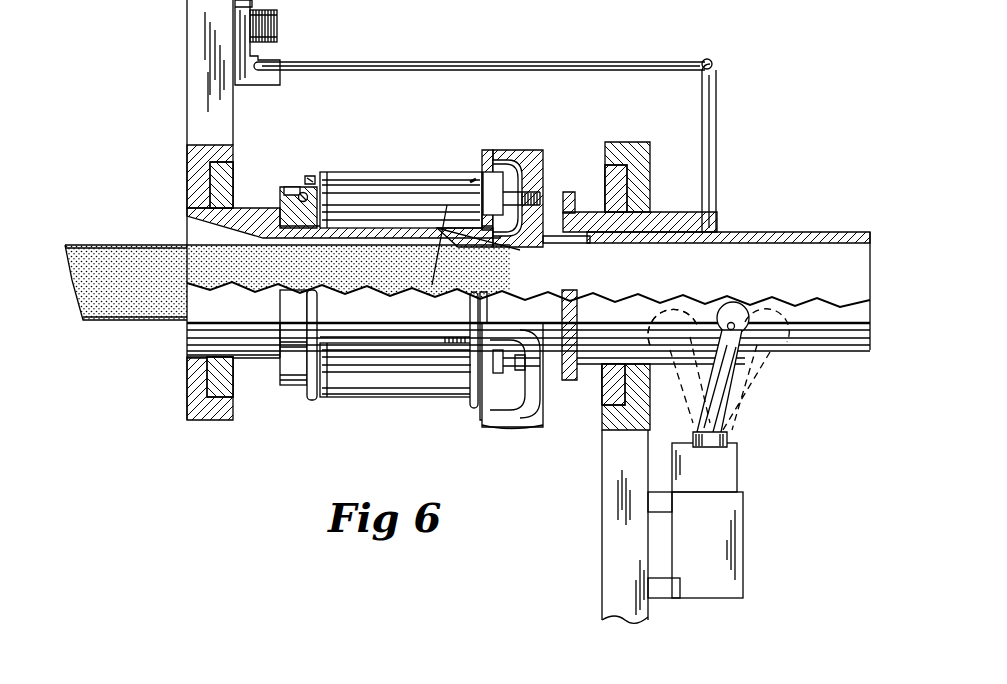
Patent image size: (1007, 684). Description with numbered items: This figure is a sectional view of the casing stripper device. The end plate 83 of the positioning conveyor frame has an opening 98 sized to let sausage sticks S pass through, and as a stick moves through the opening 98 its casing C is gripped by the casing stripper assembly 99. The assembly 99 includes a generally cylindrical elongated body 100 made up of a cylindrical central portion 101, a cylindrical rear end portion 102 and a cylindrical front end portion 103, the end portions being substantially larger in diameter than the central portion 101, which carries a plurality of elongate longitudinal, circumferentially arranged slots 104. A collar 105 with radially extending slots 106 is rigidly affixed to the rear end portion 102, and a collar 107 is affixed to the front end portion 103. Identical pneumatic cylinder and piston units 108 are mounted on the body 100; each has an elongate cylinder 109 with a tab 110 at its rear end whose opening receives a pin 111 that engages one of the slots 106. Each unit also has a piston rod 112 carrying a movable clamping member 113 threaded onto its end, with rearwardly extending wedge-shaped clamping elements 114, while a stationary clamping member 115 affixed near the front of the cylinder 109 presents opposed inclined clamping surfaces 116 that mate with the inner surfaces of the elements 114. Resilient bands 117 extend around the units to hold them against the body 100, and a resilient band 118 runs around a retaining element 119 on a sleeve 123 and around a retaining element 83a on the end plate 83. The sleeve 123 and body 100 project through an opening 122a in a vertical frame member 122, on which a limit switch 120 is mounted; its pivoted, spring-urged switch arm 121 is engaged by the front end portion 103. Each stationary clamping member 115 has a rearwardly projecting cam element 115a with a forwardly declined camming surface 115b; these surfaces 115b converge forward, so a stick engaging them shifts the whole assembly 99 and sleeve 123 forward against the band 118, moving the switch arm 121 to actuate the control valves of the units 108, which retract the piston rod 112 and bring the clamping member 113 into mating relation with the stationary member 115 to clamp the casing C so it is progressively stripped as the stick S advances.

The end plate 83 is at (187, 410).
The retaining element 83a is at (262, 57).
The opening 98 is at (200, 340).
The casing stripper assembly 99 is at (265, 480).
The casing stripper body 100 is at (185, 333).
The central portion 101 is at (372, 350).
The rear end portion 102 is at (187, 222).
The front end portion 103 is at (685, 215).
The slots 104 is at (548, 238).
The collar 105 is at (285, 200).
The radially extending slots 106 is at (278, 200).
The collar 107 is at (540, 198).
The pneumatic cylinder and piston units 108 is at (397, 168).
The cylinder 109 is at (362, 164).
The tab 110 is at (302, 192).
The pin 111 is at (311, 176).
The piston rod 112 is at (540, 158).
The movable clamping member 113 is at (545, 150).
The wedge-shaped clamping elements 114 is at (518, 250).
The stationary clamping member 115 is at (478, 163).
The cam element 115a is at (440, 362).
The camming surface 115b is at (424, 258).
The inclined clamping surfaces 116 is at (488, 150).
The resilient bands 117 is at (312, 402).
The resilient band 118 is at (409, 63).
The retaining element 119 is at (708, 90).
The limit switch 120 is at (698, 598).
The switch arm 121 is at (737, 383).
The vertical frame member 122 is at (602, 527).
The opening 122a is at (677, 327).
The sleeve 123 is at (840, 232).
The casing C is at (145, 244).
The sausage stick S is at (98, 290).